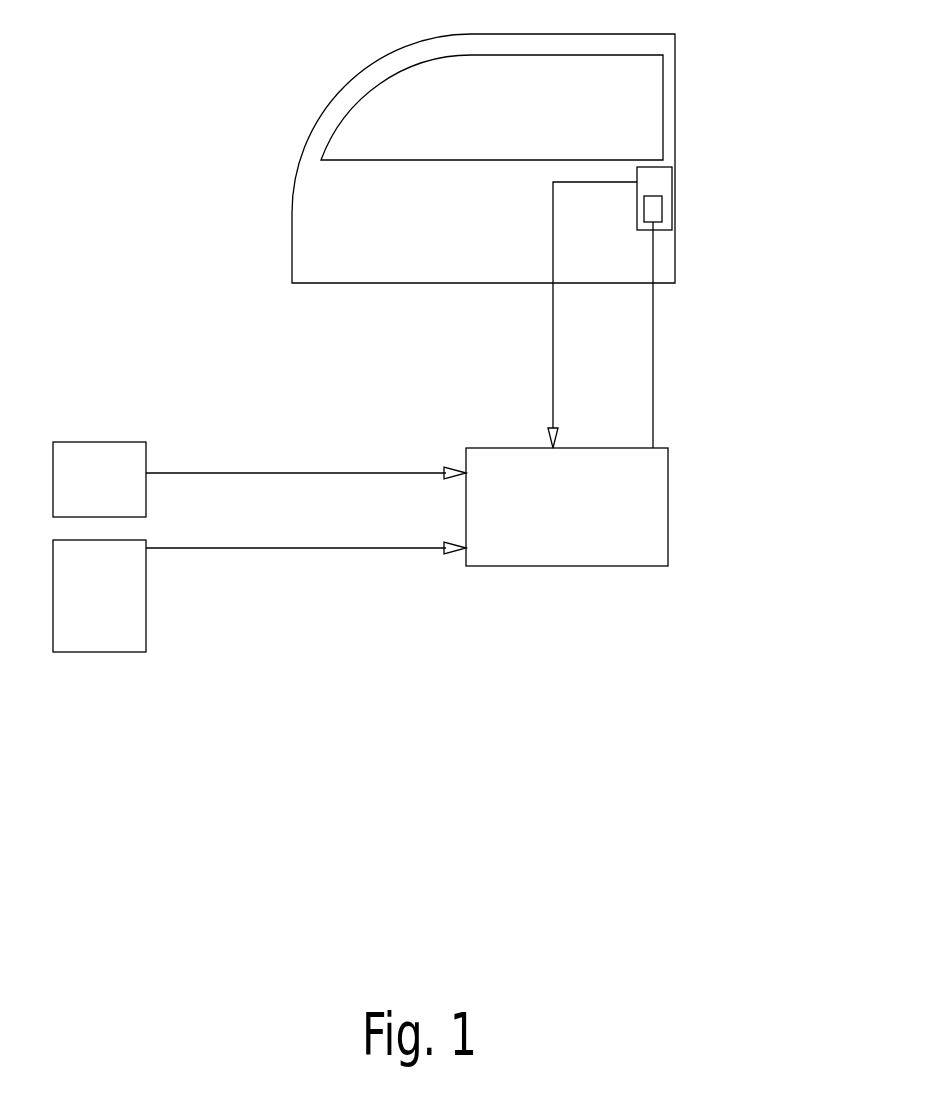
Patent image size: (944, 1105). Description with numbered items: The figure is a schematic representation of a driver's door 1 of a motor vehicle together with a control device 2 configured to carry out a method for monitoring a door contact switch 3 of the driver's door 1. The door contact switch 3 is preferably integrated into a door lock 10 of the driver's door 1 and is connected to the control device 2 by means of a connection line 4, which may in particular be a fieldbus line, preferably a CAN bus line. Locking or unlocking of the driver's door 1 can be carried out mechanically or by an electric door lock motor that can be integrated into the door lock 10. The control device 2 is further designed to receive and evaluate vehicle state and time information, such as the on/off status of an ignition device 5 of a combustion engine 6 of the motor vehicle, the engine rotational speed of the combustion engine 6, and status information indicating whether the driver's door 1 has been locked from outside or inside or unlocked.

The driver's door 1 is at (312, 312).
The control device 2 is at (573, 526).
The door contact switch 3 is at (652, 205).
The connection line 4 is at (653, 382).
The ignition device 5 is at (110, 498).
The combustion engine 6 is at (110, 613).
The door lock 10 is at (660, 180).